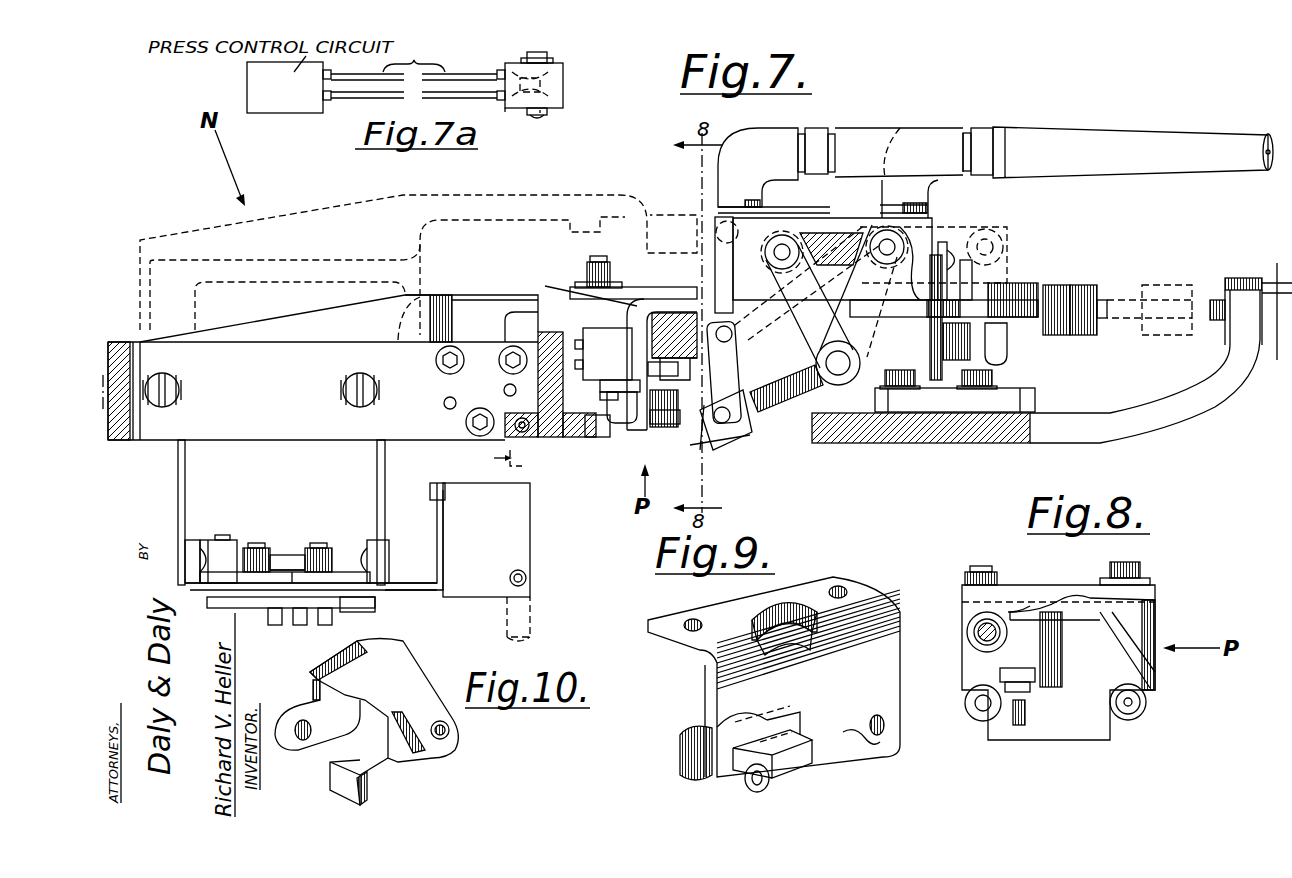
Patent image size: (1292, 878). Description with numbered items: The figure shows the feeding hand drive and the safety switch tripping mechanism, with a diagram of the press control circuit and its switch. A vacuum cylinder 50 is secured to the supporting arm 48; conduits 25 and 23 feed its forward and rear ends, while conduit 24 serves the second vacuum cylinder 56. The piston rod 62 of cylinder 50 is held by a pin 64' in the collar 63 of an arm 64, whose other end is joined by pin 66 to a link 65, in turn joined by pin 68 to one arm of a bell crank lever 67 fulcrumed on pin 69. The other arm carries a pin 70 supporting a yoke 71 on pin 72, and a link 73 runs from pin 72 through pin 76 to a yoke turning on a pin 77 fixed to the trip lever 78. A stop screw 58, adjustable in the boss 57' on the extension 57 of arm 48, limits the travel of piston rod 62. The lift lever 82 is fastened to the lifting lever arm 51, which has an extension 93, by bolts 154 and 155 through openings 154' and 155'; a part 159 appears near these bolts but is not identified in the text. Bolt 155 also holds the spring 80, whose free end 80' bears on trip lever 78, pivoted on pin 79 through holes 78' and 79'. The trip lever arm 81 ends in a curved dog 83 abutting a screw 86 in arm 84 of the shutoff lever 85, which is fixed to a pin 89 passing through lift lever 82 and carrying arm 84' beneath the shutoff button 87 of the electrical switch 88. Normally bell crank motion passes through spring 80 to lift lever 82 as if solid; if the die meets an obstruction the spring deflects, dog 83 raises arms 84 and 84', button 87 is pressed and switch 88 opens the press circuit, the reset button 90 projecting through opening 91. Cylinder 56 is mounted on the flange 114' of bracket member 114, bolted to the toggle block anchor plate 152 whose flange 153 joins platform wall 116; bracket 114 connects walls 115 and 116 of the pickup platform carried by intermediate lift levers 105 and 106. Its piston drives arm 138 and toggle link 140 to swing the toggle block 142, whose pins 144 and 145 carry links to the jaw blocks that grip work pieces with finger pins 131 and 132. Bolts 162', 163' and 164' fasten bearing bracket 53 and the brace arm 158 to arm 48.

In FIG. 7, the conduit 23 is at (1222, 135).
In FIG. 7, the conduit 24 is at (549, 624).
In FIG. 7, the conduit 25 is at (885, 130).
In FIG. 7, the supporting arm 48 is at (546, 440).
In FIG. 7, the vacuum cylinder 50 is at (925, 223).
In FIG. 7, the lifting lever arm 51 is at (473, 193).
In FIG. 7, the bearing bracket 53 is at (125, 342).
In FIG. 7, the vacuum cylinder 56 is at (533, 564).
In FIG. 7, the extension 57 is at (1156, 373).
In FIG. 7, the boss 57' is at (1258, 293).
In FIG. 7, the stop screw 58 is at (1213, 330).
In FIG. 7, the piston rod 62 is at (1110, 305).
In FIG. 7, the collar 63 is at (1052, 285).
In FIG. 7, the arm 64 is at (948, 318).
In FIG. 7, the pin 64' is at (1100, 278).
In FIG. 7, the link 65 is at (812, 232).
In FIG. 7, the pin 66 is at (885, 238).
In FIG. 7, the bell crank lever 67 is at (739, 263).
In FIG. 7, the pin 68 is at (783, 243).
In FIG. 7, the pin 69 is at (840, 385).
In FIG. 7, the pin 70 is at (737, 400).
In FIG. 7, the yoke 71 is at (714, 438).
In FIG. 7, the pin 72 is at (728, 424).
In FIG. 7, the link 73 is at (780, 398).
In FIG. 7, the pin 76 is at (724, 326).
In FIG. 7, the pin 77 is at (697, 329).
In FIG. 8, the pin 77 is at (980, 627).
In FIG. 7, the trip lever 78 is at (678, 373).
In FIG. 8, the trip lever 78 is at (987, 648).
In FIG. 10, the trip lever 78 is at (313, 753).
In FIG. 10, the hole 78' is at (477, 746).
In FIG. 8, the pin 79 is at (1143, 733).
In FIG. 9, the hole 79' is at (876, 753).
In FIG. 7, the spring 80 is at (633, 265).
In FIG. 8, the spring 80 is at (1055, 584).
In FIG. 8, the free end 80' is at (1033, 582).
In FIG. 8, the arm 81 is at (1080, 742).
In FIG. 10, the arm 81 is at (392, 760).
In FIG. 7, the lift lever 82 is at (613, 195).
In FIG. 8, the lift lever 82 is at (1157, 608).
In FIG. 9, the lift lever 82 is at (840, 577).
In FIG. 7, the curved dog 83 is at (675, 425).
In FIG. 8, the curved dog 83 is at (1017, 726).
In FIG. 10, the curved dog 83 is at (358, 803).
In FIG. 9, the arm 84 is at (798, 770).
In FIG. 7, the arm 84' is at (594, 442).
In FIG. 9, the arm 84' is at (721, 711).
In FIG. 7, the shutoff lever 85 is at (620, 424).
In FIG. 8, the shutoff lever 85 is at (970, 692).
In FIG. 9, the shutoff lever 85 is at (683, 762).
In FIG. 7, the screw 86 is at (655, 367).
In FIG. 8, the screw 86 is at (1023, 668).
In FIG. 7A, the shutoff button 87 is at (541, 113).
In FIG. 7, the shutoff button 87 is at (600, 388).
In FIG. 7A, the electrical switch 88 is at (512, 120).
In FIG. 7, the electrical switch 88 is at (603, 354).
In FIG. 7, the pin 89 is at (663, 412).
In FIG. 8, the pin 89 is at (980, 705).
In FIG. 9, the pin 89 is at (759, 782).
In FIG. 7A, the button 90 is at (545, 54).
In FIG. 7, the button 90 is at (577, 288).
In FIG. 8, the opening 91 is at (1017, 598).
In FIG. 9, the opening 91 is at (784, 629).
In FIG. 7, the extension 93 is at (327, 206).
In FIG. 7, the intermediate lift lever 105 is at (177, 473).
In FIG. 7, the intermediate lift lever 106 is at (388, 474).
In FIG. 7, the support bracket member 114 is at (338, 562).
In FIG. 7, the vertically extending flange portion 114' is at (469, 501).
In FIG. 7, the platform wall 115 is at (391, 557).
In FIG. 7, the platform wall 116 is at (187, 547).
In FIG. 7, the finger pin 131 is at (272, 624).
In FIG. 7, the finger pin 132 is at (327, 620).
In FIG. 7, the arm 138 is at (410, 592).
In FIG. 7, the toggle link 140 is at (297, 563).
In FIG. 7, the toggle block 142 is at (278, 555).
In FIG. 7, the pin 144 is at (253, 545).
In FIG. 7, the pin 145 is at (327, 543).
In FIG. 7, the toggle block anchor plate 152 is at (247, 586).
In FIG. 7, the vertically extending flanged portion 153 is at (197, 540).
In FIG. 8, the bolt 154 is at (973, 556).
In FIG. 9, the opening 154' is at (664, 641).
In FIG. 7, the bolt 155 is at (571, 254).
In FIG. 8, the bolt 155 is at (1164, 565).
In FIG. 9, the opening 155' is at (878, 575).
In FIG. 7, the bearing bracket brace arm 158 is at (320, 404).
In FIG. 7, the washer 159 is at (580, 282).
In FIG. 7, the bolt 162' is at (418, 360).
In FIG. 7, the bolt 163' is at (489, 347).
In FIG. 7, the bolt 164' is at (448, 422).